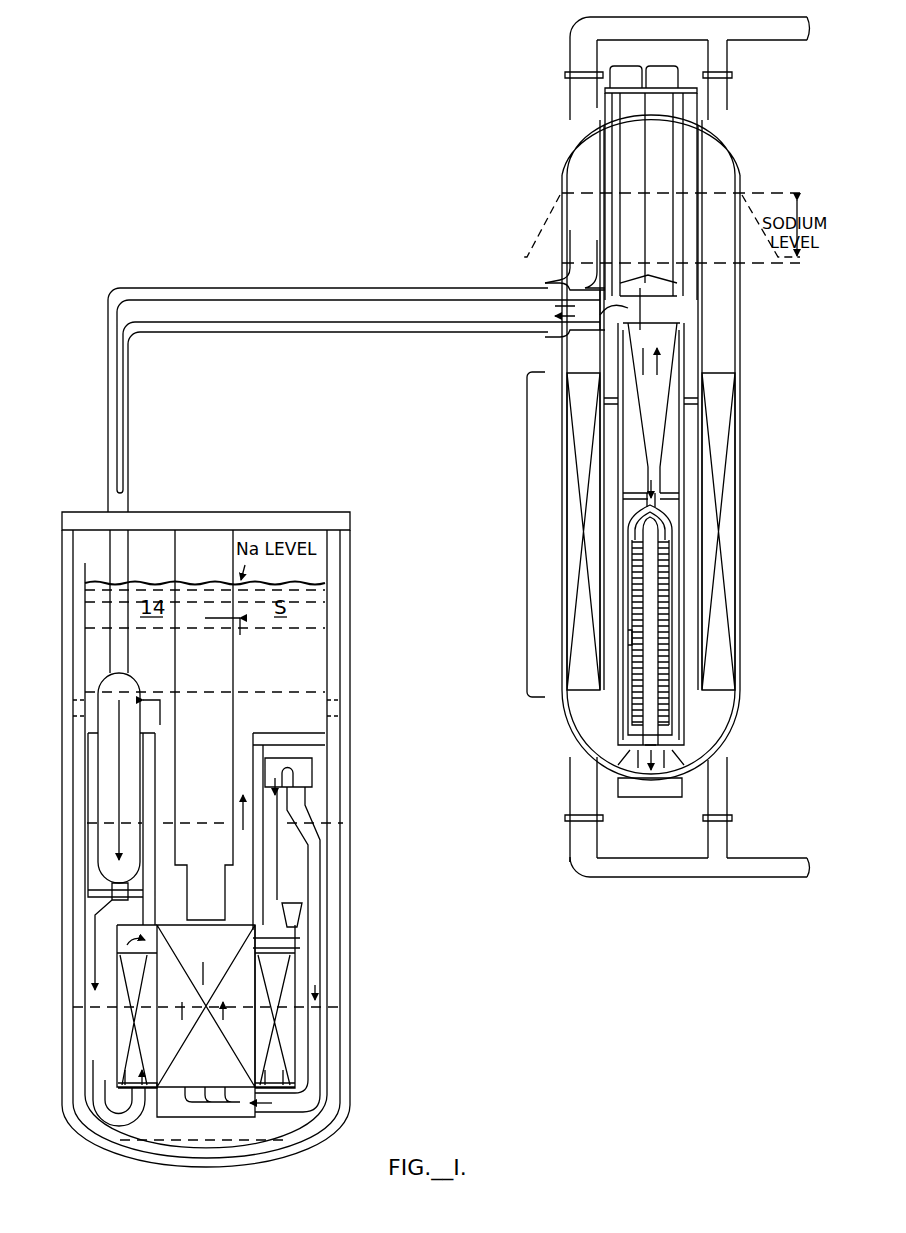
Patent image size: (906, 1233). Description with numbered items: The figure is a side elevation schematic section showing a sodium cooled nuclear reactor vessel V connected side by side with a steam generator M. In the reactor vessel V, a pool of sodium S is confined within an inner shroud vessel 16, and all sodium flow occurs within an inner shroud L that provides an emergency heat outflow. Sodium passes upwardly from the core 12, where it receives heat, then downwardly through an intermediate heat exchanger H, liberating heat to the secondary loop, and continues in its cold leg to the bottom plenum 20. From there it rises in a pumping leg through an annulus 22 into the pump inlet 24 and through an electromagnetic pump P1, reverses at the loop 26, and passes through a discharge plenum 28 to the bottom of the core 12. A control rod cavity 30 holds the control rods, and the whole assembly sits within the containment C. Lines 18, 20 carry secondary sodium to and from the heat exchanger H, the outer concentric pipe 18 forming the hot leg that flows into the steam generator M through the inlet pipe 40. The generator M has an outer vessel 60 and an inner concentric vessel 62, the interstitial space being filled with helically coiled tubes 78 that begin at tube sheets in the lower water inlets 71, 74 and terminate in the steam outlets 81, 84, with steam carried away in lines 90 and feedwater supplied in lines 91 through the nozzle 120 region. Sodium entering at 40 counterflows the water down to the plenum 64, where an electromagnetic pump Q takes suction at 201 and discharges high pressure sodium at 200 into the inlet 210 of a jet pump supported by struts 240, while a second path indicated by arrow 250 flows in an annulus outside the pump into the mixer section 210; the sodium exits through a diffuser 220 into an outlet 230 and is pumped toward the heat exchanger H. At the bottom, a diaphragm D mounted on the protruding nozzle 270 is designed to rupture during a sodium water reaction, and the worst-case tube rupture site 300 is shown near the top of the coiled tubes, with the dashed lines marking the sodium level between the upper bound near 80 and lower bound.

The core 12 is at (216, 952).
The inner shroud vessel 16 is at (85, 563).
The outer concentric pipe 18 is at (128, 506).
The bottom plenum 20 is at (108, 455).
The annulus 22 is at (287, 1070).
The pump inlet 24 is at (290, 946).
The loop 26 is at (310, 772).
The discharge plenum 28 is at (323, 930).
The control rod cavity 30 is at (212, 737).
The inlet pipe 40 is at (536, 335).
The outer vessel 60 is at (566, 573).
The inner concentric vessel 62 is at (603, 226).
The plenum 64 is at (608, 722).
The lower water inlet 71 is at (572, 772).
The lower water inlet 74 is at (730, 766).
The helically coiled tubes 78 is at (527, 503).
The inlet duct 80 is at (575, 272).
The steam outlet 81 is at (572, 132).
The steam outlet 84 is at (733, 122).
The steam line 90 is at (655, 18).
The feedwater line 91 is at (750, 878).
The outlet nozzle 120 is at (728, 108).
The pump discharge 200 is at (668, 520).
The pump suction 201 is at (660, 770).
The jet pump inlet / mixer section 210 is at (643, 508).
The diffuser 220 is at (625, 393).
The outlet 230 is at (660, 310).
The struts 240 is at (630, 488).
The annulus flow arrow 250 is at (674, 535).
The protruding nozzle 270 is at (620, 788).
The tube rupture site 300 is at (568, 380).
The containment vessel C is at (354, 630).
The diaphragm D is at (636, 798).
The intermediate heat exchanger H is at (118, 845).
The inner shroud L is at (85, 745).
The steam generator M is at (742, 527).
The electromagnetic pump P1 is at (300, 875).
The electromagnetic pump Q is at (668, 606).
The sodium S is at (636, 640).
The reactor vessel V is at (342, 782).